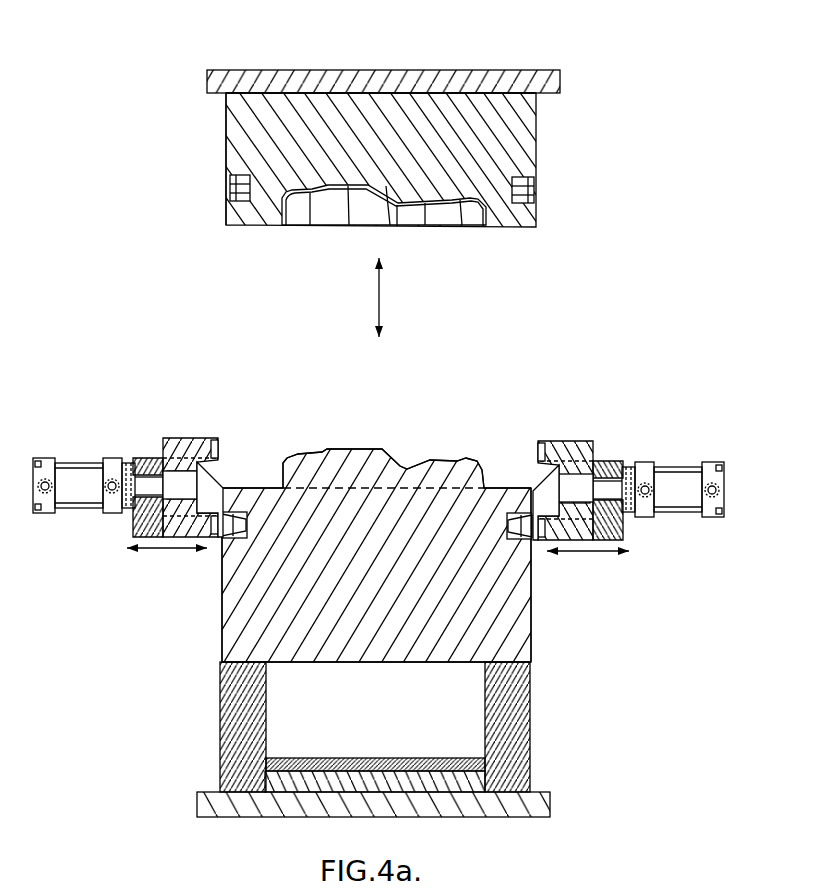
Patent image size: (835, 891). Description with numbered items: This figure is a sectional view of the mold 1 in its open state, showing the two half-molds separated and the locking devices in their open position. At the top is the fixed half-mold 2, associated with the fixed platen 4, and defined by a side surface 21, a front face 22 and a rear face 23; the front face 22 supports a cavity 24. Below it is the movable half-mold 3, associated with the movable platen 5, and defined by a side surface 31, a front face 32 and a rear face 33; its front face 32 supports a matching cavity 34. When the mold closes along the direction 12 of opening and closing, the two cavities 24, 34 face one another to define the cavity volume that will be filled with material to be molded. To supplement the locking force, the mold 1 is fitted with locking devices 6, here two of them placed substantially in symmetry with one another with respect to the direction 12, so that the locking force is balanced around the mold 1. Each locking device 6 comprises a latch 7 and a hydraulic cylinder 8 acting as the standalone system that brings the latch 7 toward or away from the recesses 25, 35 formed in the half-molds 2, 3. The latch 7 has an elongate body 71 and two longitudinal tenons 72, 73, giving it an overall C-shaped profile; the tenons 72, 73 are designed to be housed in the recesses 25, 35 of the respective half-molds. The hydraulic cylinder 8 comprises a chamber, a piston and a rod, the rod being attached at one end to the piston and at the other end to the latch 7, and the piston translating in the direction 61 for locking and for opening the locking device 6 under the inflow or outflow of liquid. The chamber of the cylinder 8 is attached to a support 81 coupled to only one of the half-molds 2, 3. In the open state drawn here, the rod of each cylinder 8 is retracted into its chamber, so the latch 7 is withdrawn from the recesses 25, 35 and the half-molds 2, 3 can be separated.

The mold 1 is at (192, 710).
The fixed half-mold 2 is at (498, 130).
The side surface 21 is at (226, 133).
The front face 22 is at (385, 232).
The rear face 23 is at (398, 90).
The cavity 24 is at (445, 192).
The recess 25 is at (236, 193).
The movable half-mold 3 is at (494, 643).
The side surface 31 is at (220, 641).
The front face 32 is at (498, 486).
The rear face 33 is at (392, 665).
The cavity 34 is at (345, 452).
The recess 35 is at (228, 542).
The fixed platen 4 is at (493, 82).
The movable platen 5 is at (523, 818).
The locking device 6 is at (378, 474).
The direction for locking and for opening 61 is at (167, 549).
The latch 7 is at (380, 460).
The elongate body 71 is at (183, 468).
The tenon 72 is at (208, 436).
The tenon 73 is at (212, 540).
The hydraulic cylinder 8 is at (70, 518).
The support 81 is at (202, 487).
The direction of opening and closing 12 is at (379, 293).